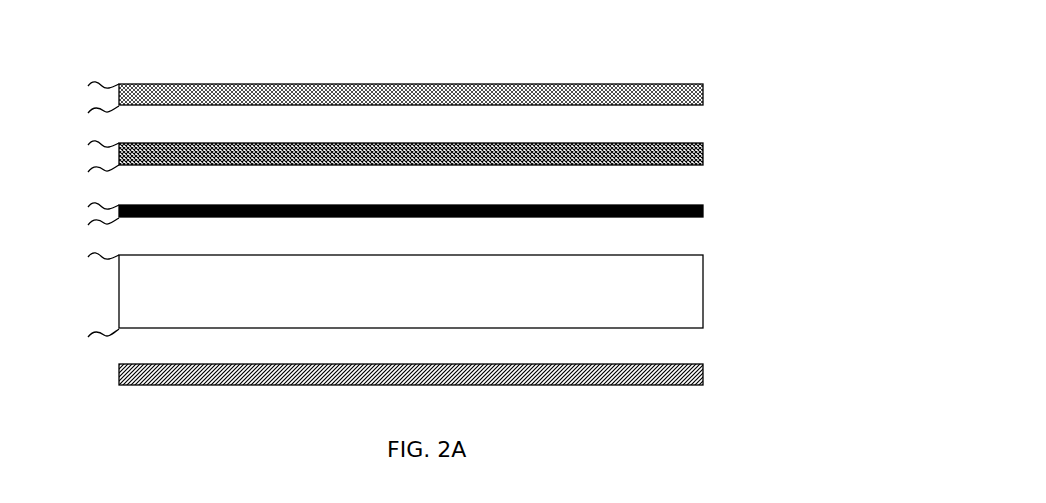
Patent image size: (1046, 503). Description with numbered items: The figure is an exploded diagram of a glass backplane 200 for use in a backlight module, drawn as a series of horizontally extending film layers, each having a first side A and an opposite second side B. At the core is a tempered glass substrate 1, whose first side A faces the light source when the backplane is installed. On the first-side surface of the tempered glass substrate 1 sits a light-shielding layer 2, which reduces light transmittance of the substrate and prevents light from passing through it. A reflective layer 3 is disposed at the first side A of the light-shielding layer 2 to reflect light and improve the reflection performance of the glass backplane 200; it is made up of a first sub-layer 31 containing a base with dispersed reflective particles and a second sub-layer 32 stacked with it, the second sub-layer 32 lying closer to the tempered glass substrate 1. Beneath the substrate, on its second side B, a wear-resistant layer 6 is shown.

The glass backplane 200 is at (696, 42).
The reflective layer 3 is at (448, 125).
The first sub-layer 31 is at (703, 93).
The second sub-layer 32 is at (437, 156).
The light-shielding layer 2 is at (703, 211).
The tempered glass substrate 1 is at (688, 297).
The wear-resistant layer 6 is at (690, 376).